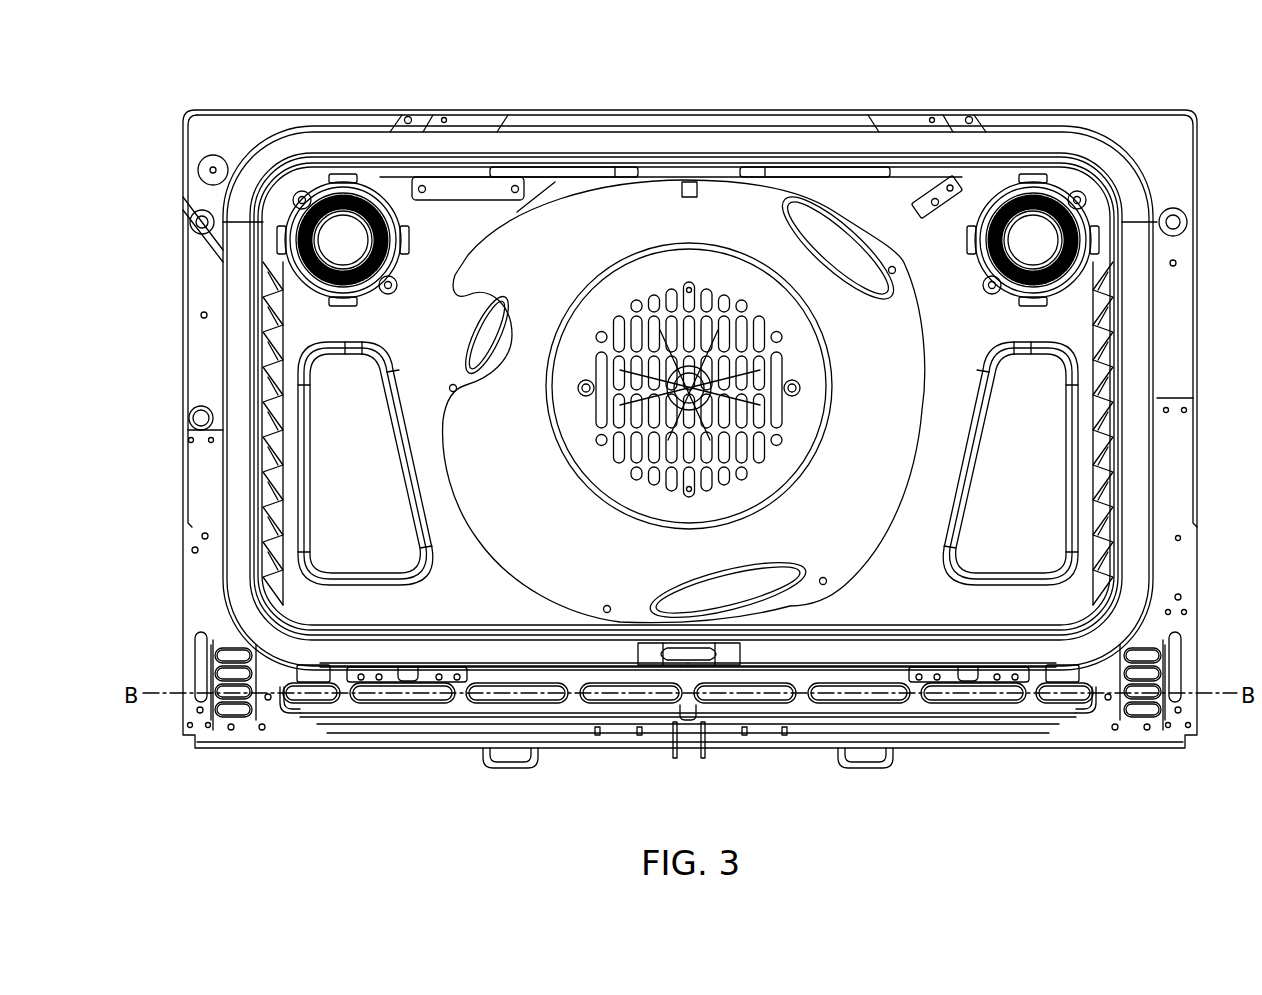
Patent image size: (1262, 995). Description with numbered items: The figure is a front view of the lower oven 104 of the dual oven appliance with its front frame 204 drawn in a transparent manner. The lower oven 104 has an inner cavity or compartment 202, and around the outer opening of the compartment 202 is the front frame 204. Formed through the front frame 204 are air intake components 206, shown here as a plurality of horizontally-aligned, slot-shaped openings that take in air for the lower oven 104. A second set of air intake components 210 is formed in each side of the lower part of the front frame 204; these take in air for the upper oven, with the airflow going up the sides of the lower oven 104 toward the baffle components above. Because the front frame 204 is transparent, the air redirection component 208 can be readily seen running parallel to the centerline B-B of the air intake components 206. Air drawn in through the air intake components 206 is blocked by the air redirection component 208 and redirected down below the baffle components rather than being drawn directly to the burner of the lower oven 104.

The lower oven 104 is at (1158, 92).
The inner cavity or compartment 202 is at (333, 311).
The front frame 204 is at (203, 509).
The air intake components 206 is at (281, 736).
The air redirection component 208 is at (796, 680).
The air intake components 210 is at (205, 687).